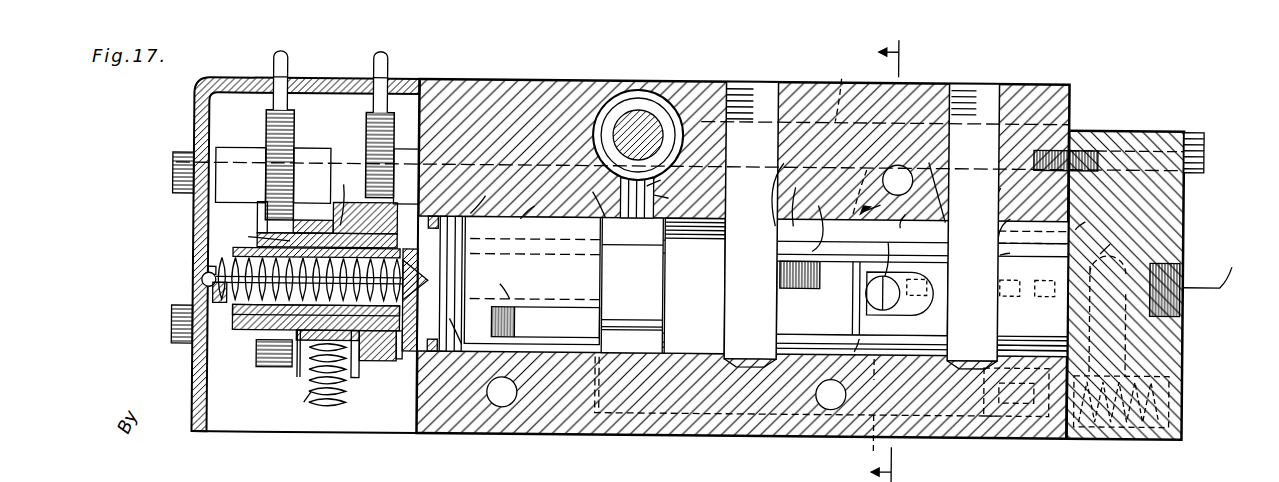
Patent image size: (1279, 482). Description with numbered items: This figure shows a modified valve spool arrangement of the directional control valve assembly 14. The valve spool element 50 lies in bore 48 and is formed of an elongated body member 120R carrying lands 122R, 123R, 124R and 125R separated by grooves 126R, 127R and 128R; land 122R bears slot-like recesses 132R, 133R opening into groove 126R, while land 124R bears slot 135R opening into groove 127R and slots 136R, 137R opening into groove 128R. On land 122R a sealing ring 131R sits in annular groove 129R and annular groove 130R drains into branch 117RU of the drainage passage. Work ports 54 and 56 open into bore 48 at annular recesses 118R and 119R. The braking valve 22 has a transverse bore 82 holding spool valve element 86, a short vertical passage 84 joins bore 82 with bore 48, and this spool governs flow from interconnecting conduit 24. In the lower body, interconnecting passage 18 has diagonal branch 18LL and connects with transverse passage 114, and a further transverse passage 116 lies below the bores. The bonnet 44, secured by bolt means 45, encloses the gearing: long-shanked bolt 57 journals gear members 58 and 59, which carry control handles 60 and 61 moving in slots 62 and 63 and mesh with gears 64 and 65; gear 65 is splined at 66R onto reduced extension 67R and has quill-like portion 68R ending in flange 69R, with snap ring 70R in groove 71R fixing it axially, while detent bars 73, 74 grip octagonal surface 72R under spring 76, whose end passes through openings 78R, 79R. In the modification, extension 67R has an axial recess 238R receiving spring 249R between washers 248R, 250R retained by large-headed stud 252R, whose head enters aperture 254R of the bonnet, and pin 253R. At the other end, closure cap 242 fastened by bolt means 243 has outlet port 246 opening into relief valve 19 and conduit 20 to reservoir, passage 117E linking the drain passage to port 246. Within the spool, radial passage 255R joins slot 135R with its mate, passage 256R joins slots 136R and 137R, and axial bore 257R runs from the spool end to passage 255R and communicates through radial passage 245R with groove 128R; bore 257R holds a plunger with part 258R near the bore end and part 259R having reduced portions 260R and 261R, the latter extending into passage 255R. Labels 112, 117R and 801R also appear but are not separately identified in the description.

The directional control valve assembly 14 is at (506, 76).
The interconnecting passage 18 is at (894, 261).
The diagonal branch 18LL is at (770, 385).
The relief valve 19 is at (1105, 420).
The conduit 20 is at (1217, 266).
The braking valve 22 is at (627, 129).
The interconnecting conduit 24 is at (844, 89).
The bonnet 44 is at (318, 81).
The bolt means 45 is at (182, 328).
The bore 48 is at (819, 218).
The valve spool element 50 is at (874, 203).
The work port 54 is at (745, 81).
The work port 56 is at (955, 81).
The long-shanked bolt 57 is at (185, 158).
The gear member 58 is at (282, 130).
The gear member 59 is at (372, 130).
The operating control handle 60 is at (278, 58).
The operating control handle 61 is at (386, 72).
The slot 62 is at (272, 80).
The slot 63 is at (372, 80).
The gear 64 is at (262, 218).
The gear 65 is at (400, 362).
The splining 66R is at (253, 232).
The reduced-section extension portion 67R is at (379, 343).
The quill-like portion 68R is at (262, 362).
The flange 69R is at (262, 343).
The snap ring 70R is at (256, 330).
The annular groove 71R is at (252, 318).
The octagonal surface 72R is at (297, 372).
The detent bar 73 is at (346, 194).
The detent bar 74 is at (356, 375).
The spring 76 is at (320, 408).
The opening 78R is at (372, 238).
The opening 79R is at (286, 401).
The transverse bore 82 is at (598, 137).
The vertical passage 84 is at (676, 174).
The spool valve element 86 is at (658, 105).
The hole 112 is at (898, 163).
The transverse passage 114 is at (817, 393).
The transverse passage 116 is at (518, 393).
The passage 117E is at (1125, 235).
The piston 117R is at (488, 262).
The transverse branch 117RU is at (505, 195).
The annular recess 118R is at (806, 196).
The annular recess 119R is at (927, 182).
The elongated body member 120R is at (730, 218).
The land 122R is at (549, 204).
The land 123R is at (686, 192).
The land 124R is at (921, 210).
The land 125R is at (1107, 213).
The groove 126R is at (581, 197).
The groove 127R is at (801, 185).
The groove 128R is at (1022, 208).
The annular groove 129R is at (432, 330).
The annular groove 130R is at (448, 340).
The fluid-sealing ring member 131R is at (447, 215).
The slot-like recess 132R is at (632, 286).
The slot-like recess 133R is at (631, 338).
The slot-like recess 135R is at (845, 344).
The slot-like recess 136R is at (882, 405).
The slot-like recess 137R is at (872, 180).
The axial recess 238R is at (215, 252).
The end closure cap 242 is at (1142, 127).
The bolt means 243 is at (1203, 148).
The radial passage 245R is at (977, 291).
The outlet port 246 is at (1185, 262).
The collar-like washer 248R is at (215, 300).
The spring 249R is at (208, 272).
The collar-like washer 250R is at (498, 288).
The large headed stud 252R is at (204, 283).
The pin 253R is at (481, 345).
The aperture 254R is at (222, 262).
The radial passage 255R is at (903, 248).
The radial passage 256R is at (753, 283).
The axial bore 257R is at (1012, 264).
The plunger part 258R is at (1032, 328).
The plunger part 259R is at (1026, 212).
The reduced section portion 260R is at (1027, 242).
The reduced section portion 261R is at (883, 308).
The block 801R is at (305, 230).